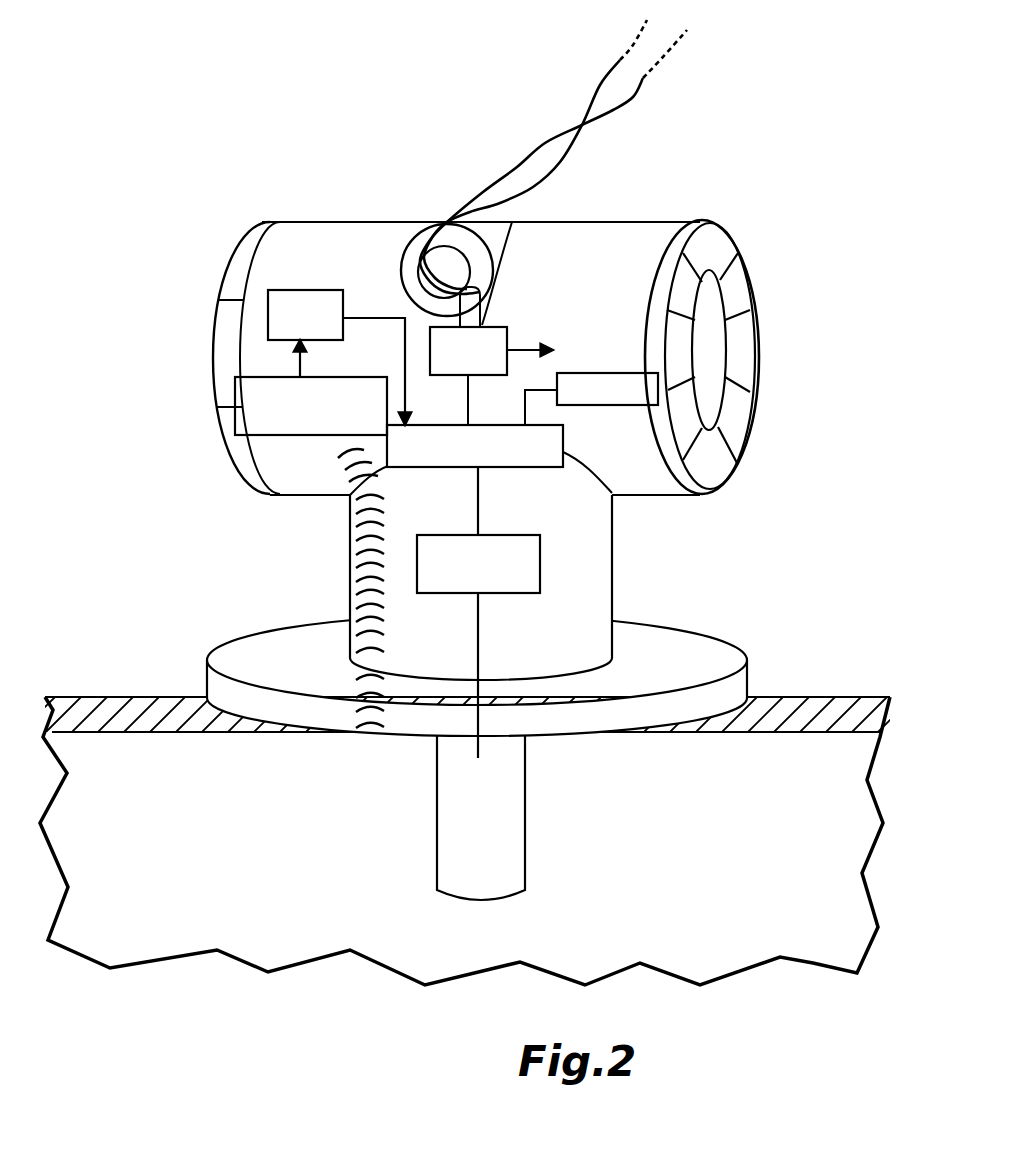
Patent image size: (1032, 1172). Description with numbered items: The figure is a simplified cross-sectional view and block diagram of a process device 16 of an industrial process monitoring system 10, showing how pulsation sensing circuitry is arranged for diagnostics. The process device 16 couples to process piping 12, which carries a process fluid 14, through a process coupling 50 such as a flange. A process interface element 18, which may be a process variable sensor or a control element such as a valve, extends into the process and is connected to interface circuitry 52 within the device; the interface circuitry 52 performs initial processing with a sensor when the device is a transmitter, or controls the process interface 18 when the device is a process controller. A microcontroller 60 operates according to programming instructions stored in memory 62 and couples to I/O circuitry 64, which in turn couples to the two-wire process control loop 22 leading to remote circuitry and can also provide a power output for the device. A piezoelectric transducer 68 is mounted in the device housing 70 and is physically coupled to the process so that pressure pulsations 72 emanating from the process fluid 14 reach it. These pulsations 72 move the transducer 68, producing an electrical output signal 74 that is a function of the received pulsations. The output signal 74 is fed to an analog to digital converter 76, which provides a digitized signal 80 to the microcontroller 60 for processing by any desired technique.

The industrial process controller monitoring system 10 is at (778, 116).
The process piping 12 is at (804, 697).
The process fluid 14 is at (712, 870).
The process device 16 is at (288, 212).
The process interface element 18 is at (455, 815).
The process control loop 22 is at (548, 143).
The process coupling 50 is at (712, 652).
The interface circuitry 52 is at (525, 537).
The microcontroller 60 is at (563, 452).
The memory 62 is at (602, 405).
The I/O circuitry 64 is at (487, 327).
The piezoelectric transducer 68 is at (235, 407).
The device housing 70 is at (235, 300).
The pressure pulsations 72 is at (350, 592).
The electrical output signal 74 is at (299, 368).
The analog to digital converter 76 is at (305, 290).
The digitized signal 80 is at (367, 318).